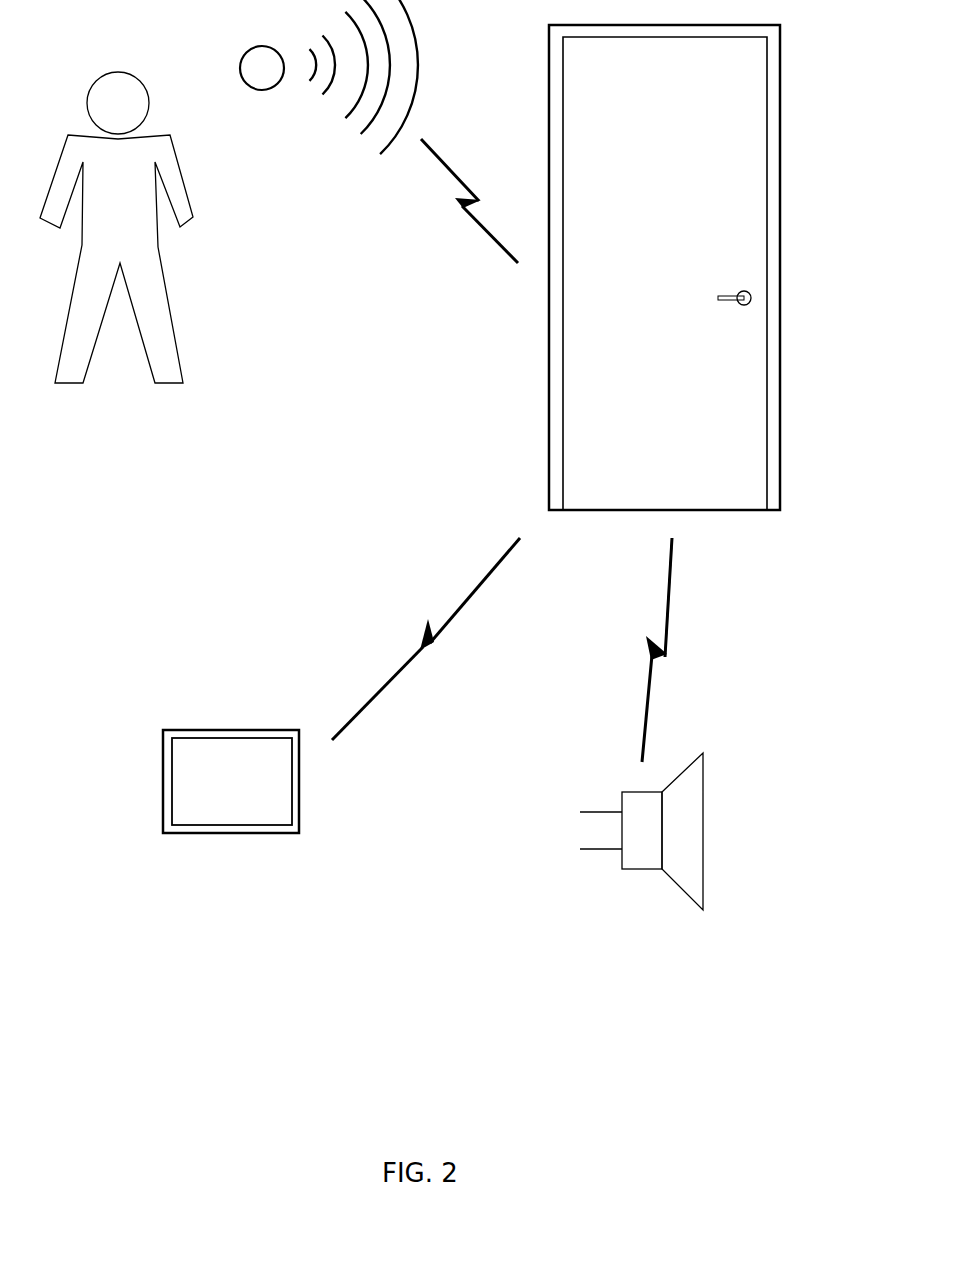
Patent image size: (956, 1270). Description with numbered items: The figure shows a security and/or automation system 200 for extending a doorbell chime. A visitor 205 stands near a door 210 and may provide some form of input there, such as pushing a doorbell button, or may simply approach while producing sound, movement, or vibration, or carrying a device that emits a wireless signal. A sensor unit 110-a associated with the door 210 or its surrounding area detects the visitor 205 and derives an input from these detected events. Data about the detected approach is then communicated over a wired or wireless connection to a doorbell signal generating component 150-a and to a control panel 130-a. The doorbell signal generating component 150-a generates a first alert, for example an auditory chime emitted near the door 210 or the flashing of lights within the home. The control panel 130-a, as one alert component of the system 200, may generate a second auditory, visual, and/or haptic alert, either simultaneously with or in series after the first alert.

The visitor 205 is at (163, 387).
The sensor unit 110-a is at (262, 90).
The door 210 is at (642, 511).
The doorbell signal generating component 150-a is at (638, 869).
The control panel 130-a is at (237, 833).
The security and/or automation system 200 is at (693, 1113).